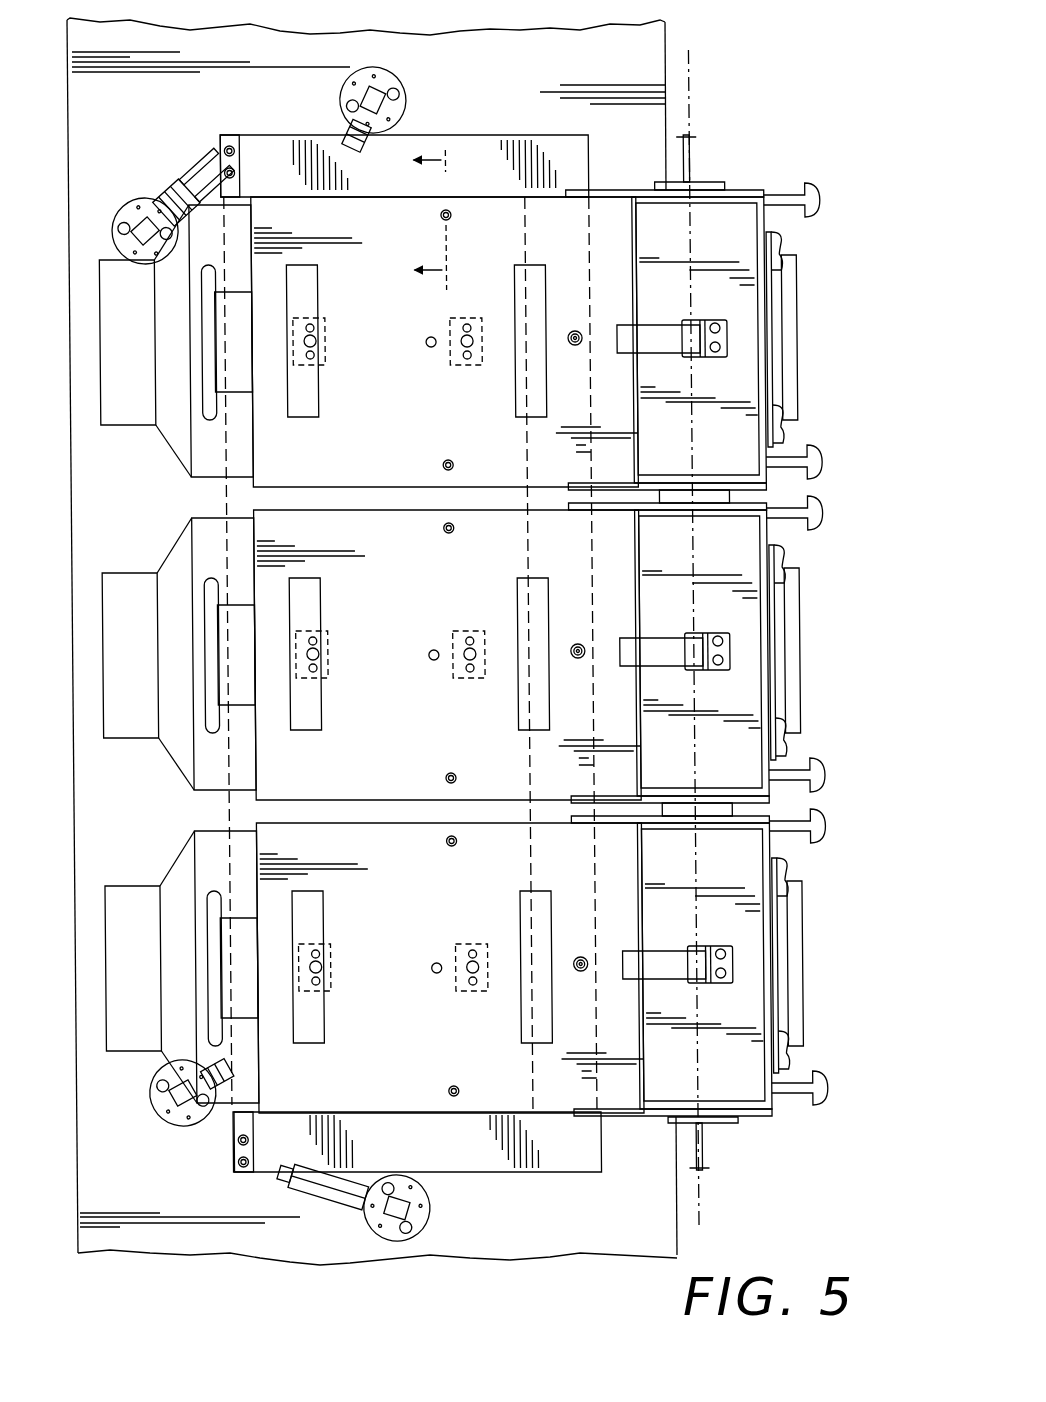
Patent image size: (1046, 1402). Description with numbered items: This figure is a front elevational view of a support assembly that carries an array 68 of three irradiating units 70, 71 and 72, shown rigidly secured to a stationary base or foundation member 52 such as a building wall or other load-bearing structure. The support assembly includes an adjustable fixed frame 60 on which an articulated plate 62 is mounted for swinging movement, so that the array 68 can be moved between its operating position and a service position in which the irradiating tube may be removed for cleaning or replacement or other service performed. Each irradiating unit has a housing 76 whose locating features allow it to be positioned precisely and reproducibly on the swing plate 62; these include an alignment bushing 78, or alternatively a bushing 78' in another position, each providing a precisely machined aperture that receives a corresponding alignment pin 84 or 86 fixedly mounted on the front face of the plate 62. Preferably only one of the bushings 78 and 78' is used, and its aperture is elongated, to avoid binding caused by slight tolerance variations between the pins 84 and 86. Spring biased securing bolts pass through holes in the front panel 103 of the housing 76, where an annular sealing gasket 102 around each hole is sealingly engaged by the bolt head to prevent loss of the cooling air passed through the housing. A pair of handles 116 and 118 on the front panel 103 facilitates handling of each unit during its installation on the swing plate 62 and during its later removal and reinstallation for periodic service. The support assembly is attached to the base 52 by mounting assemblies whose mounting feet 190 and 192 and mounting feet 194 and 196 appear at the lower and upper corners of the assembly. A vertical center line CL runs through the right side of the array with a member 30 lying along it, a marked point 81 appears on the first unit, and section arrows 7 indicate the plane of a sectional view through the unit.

The section line 7- 7 is at (450, 218).
The center line CL is at (690, 90).
The pin 30 is at (690, 150).
The base or foundation member 52 is at (568, 1212).
The adjustable fixed frame 60 is at (582, 1155).
The articulated plate 62 is at (216, 1106).
The array of irradiating units 68 is at (813, 386).
The irradiating unit 70 is at (486, 273).
The irradiating unit 71 is at (463, 649).
The irradiating unit 72 is at (466, 962).
The irradiating unit housing 76 is at (500, 190).
The alignment bushing 78 is at (336, 356).
The alignment bushing 78' is at (470, 363).
The sensor 81 is at (576, 345).
The alignment pin 84 is at (580, 665).
The alignment pin 86 is at (330, 650).
The annular sealing gasket 102 is at (440, 215).
The front panel 103 is at (295, 213).
The handle 116 is at (318, 320).
The handle 118 is at (512, 297).
The mounting foot 190 is at (172, 1126).
The mounting foot 192 is at (422, 1212).
The mounting foot 194 is at (407, 96).
The mounting foot 196 is at (126, 207).